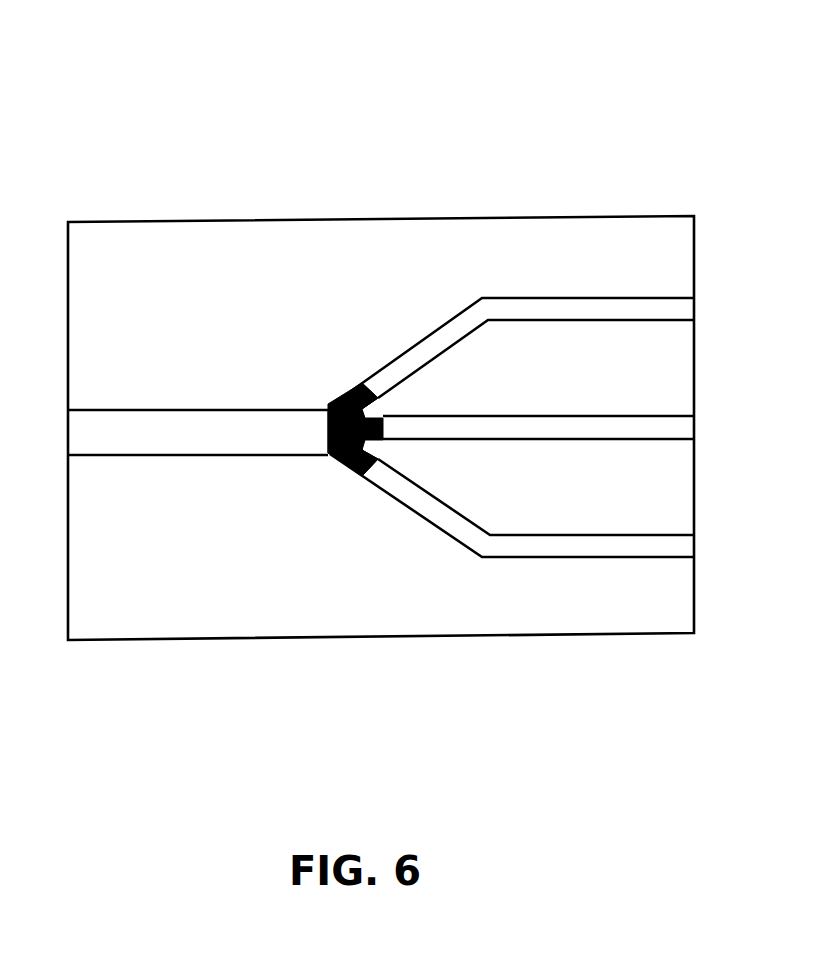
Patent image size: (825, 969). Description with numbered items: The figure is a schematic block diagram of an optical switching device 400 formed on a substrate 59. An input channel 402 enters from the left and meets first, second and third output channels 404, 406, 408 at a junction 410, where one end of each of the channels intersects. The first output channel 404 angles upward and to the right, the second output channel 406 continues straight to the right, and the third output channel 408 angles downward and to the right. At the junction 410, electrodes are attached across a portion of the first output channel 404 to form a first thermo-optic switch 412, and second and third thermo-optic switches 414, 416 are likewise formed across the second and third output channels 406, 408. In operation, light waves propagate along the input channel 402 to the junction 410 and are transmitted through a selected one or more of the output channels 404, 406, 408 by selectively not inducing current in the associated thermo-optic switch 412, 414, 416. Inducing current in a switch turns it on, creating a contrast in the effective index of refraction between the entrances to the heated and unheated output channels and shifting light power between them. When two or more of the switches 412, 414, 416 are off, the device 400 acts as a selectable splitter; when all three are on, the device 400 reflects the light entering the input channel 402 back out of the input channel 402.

The optical switching device 400 is at (676, 149).
The substrate 59 is at (182, 585).
The input channel 402 is at (121, 432).
The first output channel 404 is at (537, 310).
The second output channel 406 is at (508, 430).
The third output channel 408 is at (520, 548).
The junction 410 is at (315, 390).
The first thermo-optic switch 412 is at (348, 390).
The second thermo-optic switch 414 is at (325, 432).
The third thermo-optic switch 416 is at (352, 466).